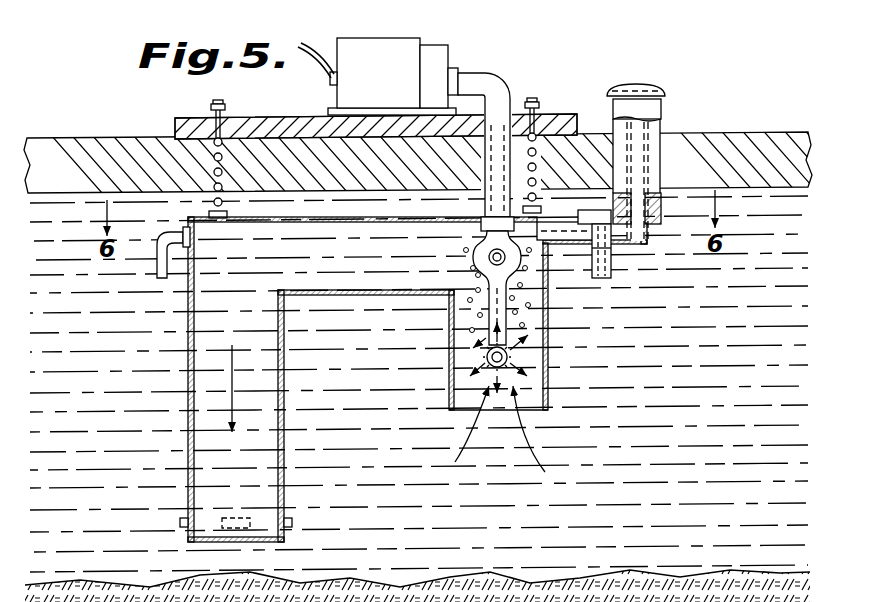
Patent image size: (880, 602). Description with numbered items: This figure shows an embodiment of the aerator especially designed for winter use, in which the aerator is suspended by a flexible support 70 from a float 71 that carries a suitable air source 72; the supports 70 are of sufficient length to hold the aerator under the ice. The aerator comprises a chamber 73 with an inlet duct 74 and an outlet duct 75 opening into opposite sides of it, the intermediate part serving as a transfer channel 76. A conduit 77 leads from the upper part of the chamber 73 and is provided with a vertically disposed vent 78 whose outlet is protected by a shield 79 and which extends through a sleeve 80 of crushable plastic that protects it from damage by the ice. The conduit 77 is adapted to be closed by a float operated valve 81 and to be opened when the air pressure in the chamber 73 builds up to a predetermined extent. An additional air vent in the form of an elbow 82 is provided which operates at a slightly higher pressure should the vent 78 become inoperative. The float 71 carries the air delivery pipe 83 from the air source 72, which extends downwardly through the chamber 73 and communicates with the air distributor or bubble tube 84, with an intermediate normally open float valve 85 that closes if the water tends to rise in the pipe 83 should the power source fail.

The flexible support 70 is at (213, 145).
The float 71 is at (263, 118).
The air source 72 is at (438, 53).
The chamber 73 is at (303, 218).
The inlet duct 74 is at (482, 373).
The outlet duct 75 is at (285, 398).
The transfer channel 76 is at (379, 247).
The conduit 77 is at (622, 247).
The vent 78 is at (660, 88).
The shield 79 is at (632, 84).
The sleeve 80 is at (662, 133).
The float operated valve 81 is at (611, 259).
The elbow 82 is at (186, 267).
The air delivery pipe 83 is at (505, 93).
The bubble tube 84 is at (487, 352).
The float valve 85 is at (480, 247).